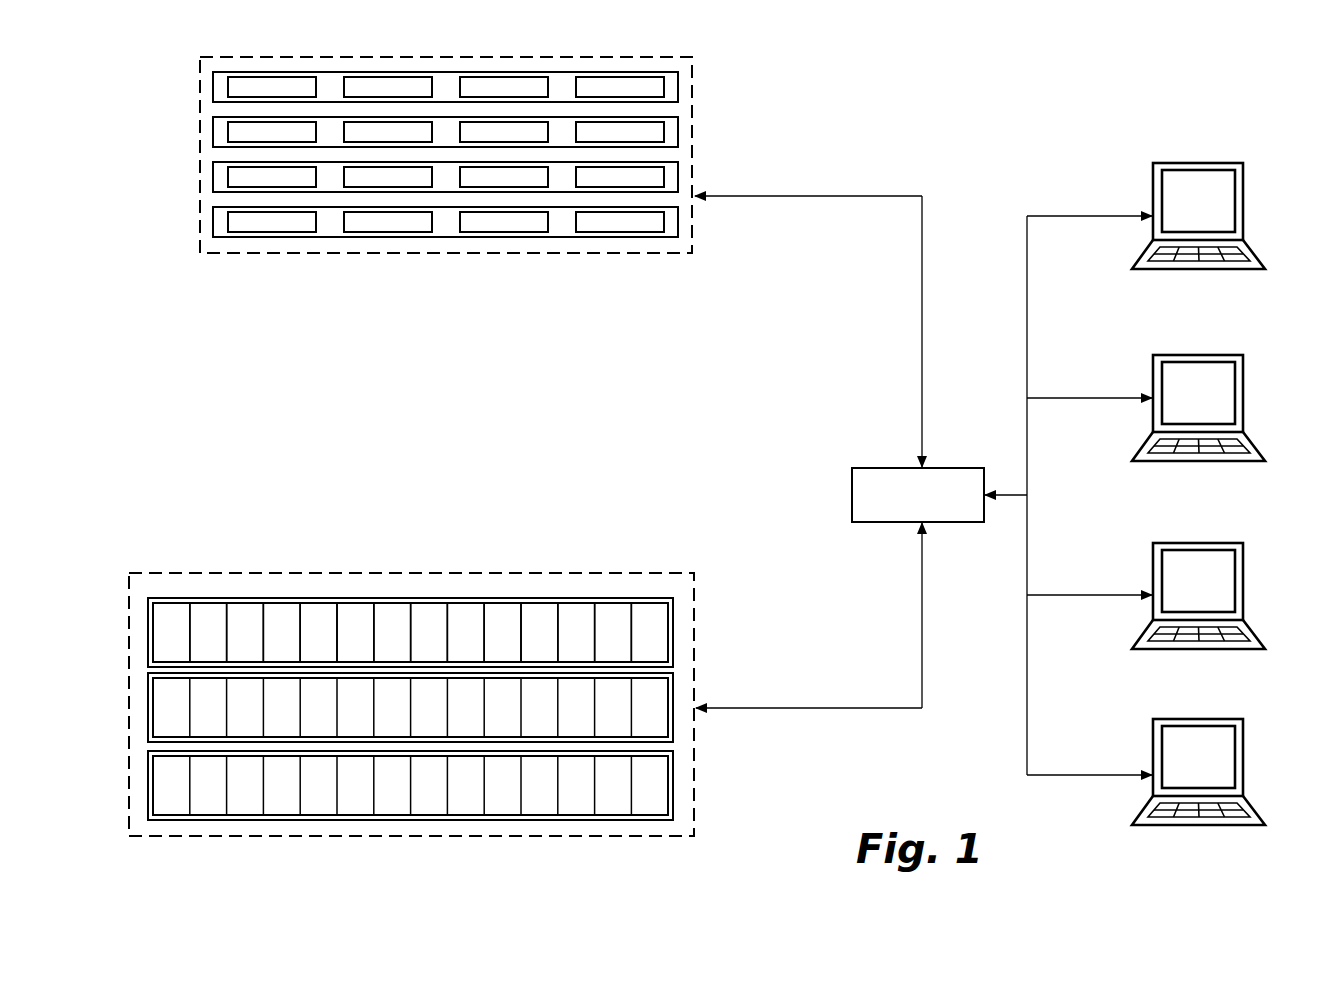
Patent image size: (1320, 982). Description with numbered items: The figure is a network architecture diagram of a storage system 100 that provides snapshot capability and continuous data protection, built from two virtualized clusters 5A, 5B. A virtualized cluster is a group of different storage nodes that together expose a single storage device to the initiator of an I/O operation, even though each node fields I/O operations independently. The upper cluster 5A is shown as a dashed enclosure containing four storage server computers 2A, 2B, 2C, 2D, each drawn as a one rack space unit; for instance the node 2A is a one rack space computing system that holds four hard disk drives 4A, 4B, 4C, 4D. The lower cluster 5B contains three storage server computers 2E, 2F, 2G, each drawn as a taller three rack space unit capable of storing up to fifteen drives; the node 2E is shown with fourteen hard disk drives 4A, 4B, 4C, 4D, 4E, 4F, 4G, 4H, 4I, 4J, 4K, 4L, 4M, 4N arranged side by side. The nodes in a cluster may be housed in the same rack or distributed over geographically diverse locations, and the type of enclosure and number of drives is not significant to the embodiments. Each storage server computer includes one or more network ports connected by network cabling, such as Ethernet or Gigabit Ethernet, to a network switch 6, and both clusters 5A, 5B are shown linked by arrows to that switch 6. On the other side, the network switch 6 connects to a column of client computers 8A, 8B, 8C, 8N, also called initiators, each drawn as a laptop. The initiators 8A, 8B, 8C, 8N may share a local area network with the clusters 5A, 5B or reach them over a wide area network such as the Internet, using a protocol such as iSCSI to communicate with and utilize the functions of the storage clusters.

The storage system 100 is at (987, 140).
The virtualized cluster 5A is at (685, 78).
The virtualized cluster 5B is at (688, 598).
The storage server computer 2A is at (670, 97).
The storage server computer 2B is at (673, 143).
The storage server computer 2C is at (673, 188).
The storage server computer 2D is at (673, 233).
The storage server computer 2E is at (673, 647).
The storage server computer 2F is at (673, 717).
The storage server computer 2G is at (673, 797).
The hard disk drive 4A is at (234, 369).
The hard disk drive 4B is at (311, 369).
The hard disk drive 4C is at (387, 369).
The hard disk drive 4D is at (463, 369).
The hard disk drive 4E is at (318, 632).
The hard disk drive 4F is at (355, 632).
The hard disk drive 4G is at (392, 632).
The hard disk drive 4H is at (429, 632).
The hard disk drive 4I is at (465, 632).
The hard disk drive 4J is at (502, 632).
The hard disk drive 4K is at (539, 632).
The hard disk drive 4L is at (576, 632).
The hard disk drive 4M is at (613, 632).
The hard disk drive 4N is at (649, 632).
The network switch 6 is at (948, 522).
The client computer 8A is at (1238, 272).
The client computer 8B is at (1238, 464).
The client computer 8C is at (1238, 652).
The client computer 8N is at (1238, 828).